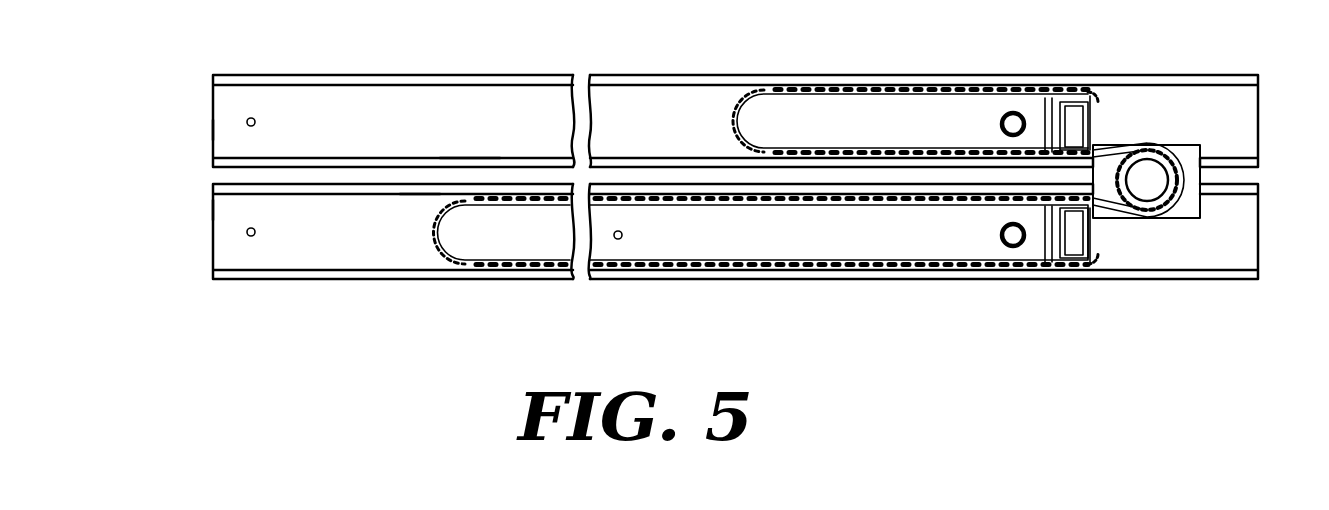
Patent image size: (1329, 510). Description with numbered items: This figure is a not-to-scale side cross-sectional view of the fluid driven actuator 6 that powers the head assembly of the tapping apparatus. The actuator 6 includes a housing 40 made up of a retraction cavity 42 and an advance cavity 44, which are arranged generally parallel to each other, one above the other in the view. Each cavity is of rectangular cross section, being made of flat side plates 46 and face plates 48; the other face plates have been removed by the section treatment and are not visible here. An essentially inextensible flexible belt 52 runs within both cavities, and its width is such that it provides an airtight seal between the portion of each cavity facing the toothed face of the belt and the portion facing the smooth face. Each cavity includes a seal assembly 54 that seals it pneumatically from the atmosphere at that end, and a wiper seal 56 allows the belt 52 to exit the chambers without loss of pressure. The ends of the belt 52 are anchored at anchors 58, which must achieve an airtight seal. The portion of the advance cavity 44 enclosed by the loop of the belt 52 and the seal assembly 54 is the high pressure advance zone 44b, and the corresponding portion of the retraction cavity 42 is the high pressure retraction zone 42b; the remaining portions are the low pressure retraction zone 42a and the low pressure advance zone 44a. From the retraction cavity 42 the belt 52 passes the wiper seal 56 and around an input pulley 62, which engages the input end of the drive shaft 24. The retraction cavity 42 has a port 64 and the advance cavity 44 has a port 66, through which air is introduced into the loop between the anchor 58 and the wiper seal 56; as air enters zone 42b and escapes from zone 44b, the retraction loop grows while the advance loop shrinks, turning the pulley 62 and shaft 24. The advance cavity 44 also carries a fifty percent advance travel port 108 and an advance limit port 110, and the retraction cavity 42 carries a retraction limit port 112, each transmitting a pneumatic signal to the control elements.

The actuator 6 is at (235, 292).
The drive shaft 24 is at (1150, 172).
The housing 40 is at (217, 205).
The retraction cavity 42 is at (367, 110).
The low pressure retraction zone 42a is at (686, 110).
The high pressure retraction zone 42b is at (893, 122).
The advance cavity 44 is at (405, 228).
The low pressure advance zone 44a is at (350, 252).
The high pressure advance zone 44b is at (776, 240).
The flat side plates 46 is at (468, 80).
The face plates 48 is at (300, 139).
The flexible belt 52 is at (752, 95).
The seal assembly 54 is at (1070, 110).
The wiper seal 56 is at (1048, 110).
The anchors 58 is at (1105, 102).
The input pulley 62 is at (1205, 183).
The port 64 is at (1013, 112).
The port 66 is at (1004, 240).
The 50% advance travel port 108 is at (618, 240).
The advance limit port 110 is at (247, 233).
The retraction limit port 112 is at (247, 120).